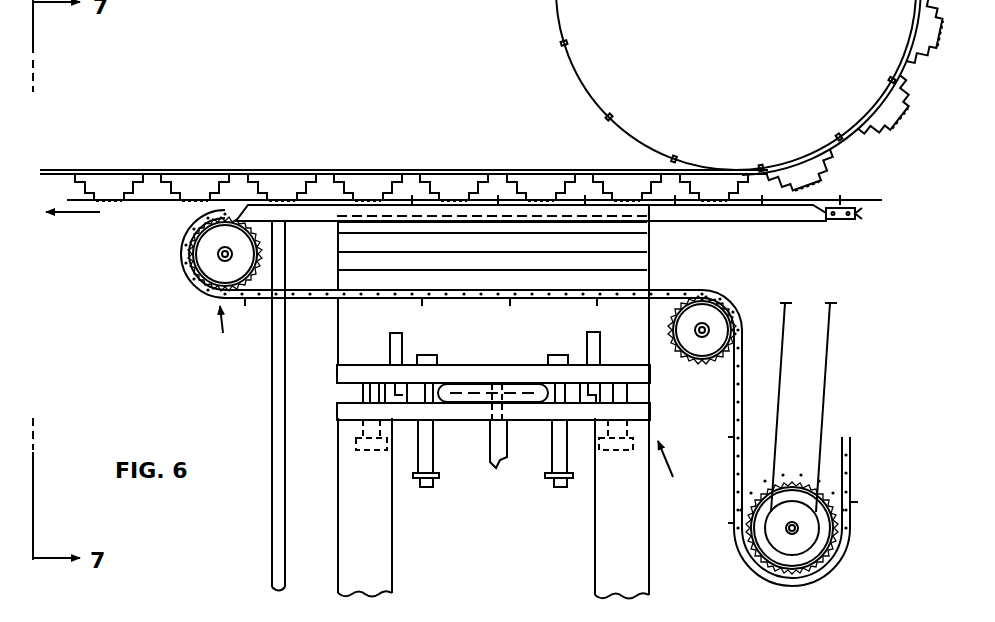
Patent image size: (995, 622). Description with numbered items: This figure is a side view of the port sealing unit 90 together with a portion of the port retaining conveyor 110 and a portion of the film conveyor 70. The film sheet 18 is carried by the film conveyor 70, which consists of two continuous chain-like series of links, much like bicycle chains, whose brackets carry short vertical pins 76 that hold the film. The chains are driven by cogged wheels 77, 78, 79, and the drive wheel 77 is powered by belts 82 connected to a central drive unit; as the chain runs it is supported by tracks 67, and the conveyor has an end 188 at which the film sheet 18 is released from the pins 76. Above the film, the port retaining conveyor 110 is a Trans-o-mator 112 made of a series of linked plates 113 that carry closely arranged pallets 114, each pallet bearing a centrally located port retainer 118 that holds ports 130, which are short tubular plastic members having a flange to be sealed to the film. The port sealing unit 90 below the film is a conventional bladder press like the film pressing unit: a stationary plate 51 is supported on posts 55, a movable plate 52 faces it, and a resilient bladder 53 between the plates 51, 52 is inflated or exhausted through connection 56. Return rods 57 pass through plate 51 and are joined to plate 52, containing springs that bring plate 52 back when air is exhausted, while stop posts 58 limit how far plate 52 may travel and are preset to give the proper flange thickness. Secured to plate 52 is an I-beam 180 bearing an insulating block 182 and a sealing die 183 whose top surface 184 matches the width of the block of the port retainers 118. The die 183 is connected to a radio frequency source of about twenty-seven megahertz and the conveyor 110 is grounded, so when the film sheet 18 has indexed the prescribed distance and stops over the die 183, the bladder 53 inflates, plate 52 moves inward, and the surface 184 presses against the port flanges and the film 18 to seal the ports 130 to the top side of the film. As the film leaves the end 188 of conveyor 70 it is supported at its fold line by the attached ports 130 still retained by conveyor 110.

The film sheet 18 is at (138, 203).
The stationary plate 51 is at (338, 413).
The movable plate 52 is at (338, 372).
The resilient bladder 53 is at (523, 397).
The posts 55 is at (402, 343).
The connection 56 is at (500, 457).
The return rods 57 is at (427, 457).
The stop posts 58 is at (362, 395).
The tracks 67 is at (786, 222).
The film conveyor 70 is at (228, 332).
The pins 76 is at (246, 208).
The drive wheel 77 is at (800, 562).
The cogged wheel 78 is at (703, 350).
The cogged wheel 79 is at (222, 268).
The belts 82 is at (823, 388).
The port sealing unit 90 is at (518, 508).
The port retaining conveyor 110 is at (533, 50).
The Trans-o-mator 112 is at (612, 166).
The linked plates 113 is at (182, 172).
The pallets 114 is at (437, 177).
The port retainer 118 is at (356, 180).
The ports 130 is at (882, 140).
The I-beam 180 is at (504, 332).
The insulating block 182 is at (643, 243).
The sealing die 183 is at (640, 224).
The top surface 184 is at (650, 209).
The end of conveyor 188 is at (295, 215).